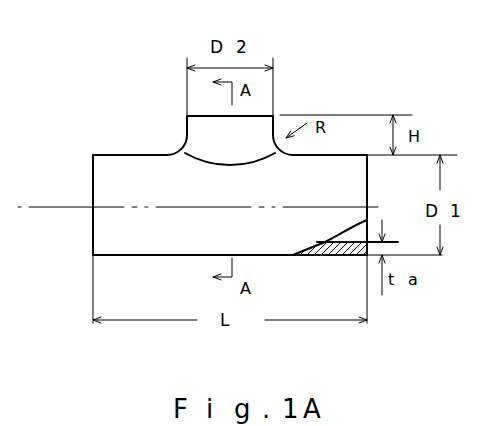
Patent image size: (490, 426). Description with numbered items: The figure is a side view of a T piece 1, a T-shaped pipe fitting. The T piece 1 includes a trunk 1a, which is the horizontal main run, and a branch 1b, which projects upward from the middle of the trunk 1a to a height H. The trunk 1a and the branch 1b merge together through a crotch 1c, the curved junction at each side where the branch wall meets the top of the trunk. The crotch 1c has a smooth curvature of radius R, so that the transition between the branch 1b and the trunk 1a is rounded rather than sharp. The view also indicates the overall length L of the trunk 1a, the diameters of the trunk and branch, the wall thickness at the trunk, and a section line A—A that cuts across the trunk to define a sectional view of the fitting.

The T piece 1 is at (410, 88).
The trunk 1a is at (110, 231).
The branch 1b is at (202, 136).
The crotch 1c is at (281, 141).